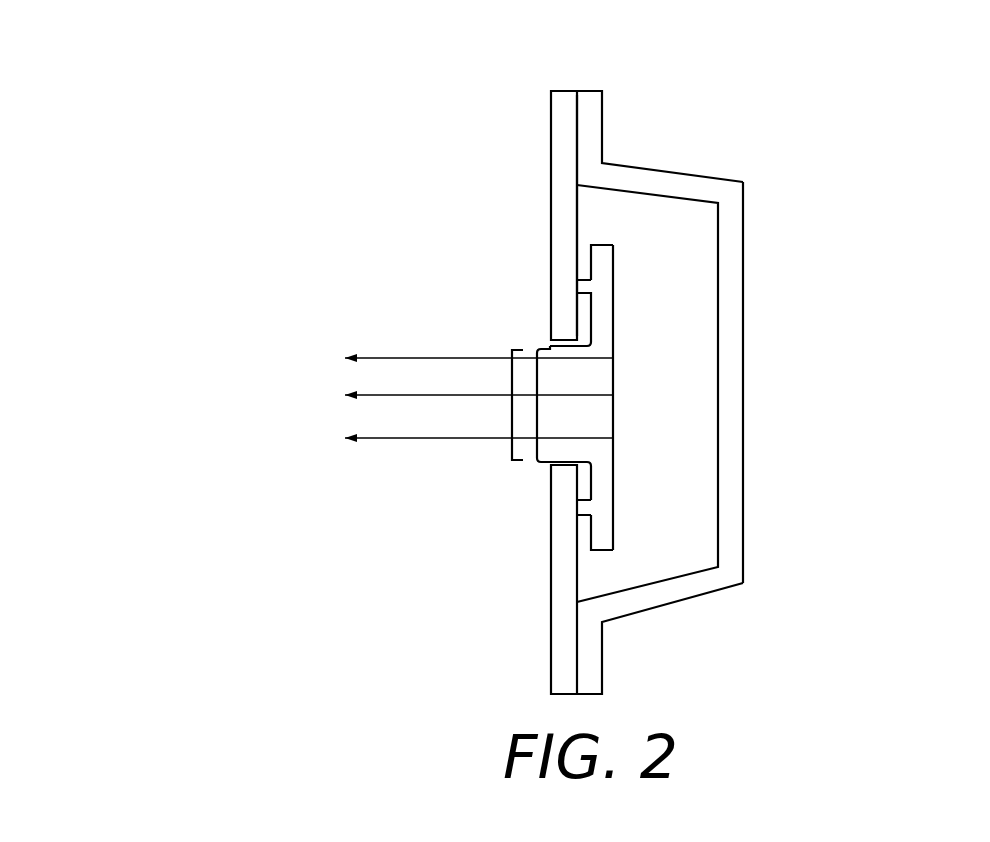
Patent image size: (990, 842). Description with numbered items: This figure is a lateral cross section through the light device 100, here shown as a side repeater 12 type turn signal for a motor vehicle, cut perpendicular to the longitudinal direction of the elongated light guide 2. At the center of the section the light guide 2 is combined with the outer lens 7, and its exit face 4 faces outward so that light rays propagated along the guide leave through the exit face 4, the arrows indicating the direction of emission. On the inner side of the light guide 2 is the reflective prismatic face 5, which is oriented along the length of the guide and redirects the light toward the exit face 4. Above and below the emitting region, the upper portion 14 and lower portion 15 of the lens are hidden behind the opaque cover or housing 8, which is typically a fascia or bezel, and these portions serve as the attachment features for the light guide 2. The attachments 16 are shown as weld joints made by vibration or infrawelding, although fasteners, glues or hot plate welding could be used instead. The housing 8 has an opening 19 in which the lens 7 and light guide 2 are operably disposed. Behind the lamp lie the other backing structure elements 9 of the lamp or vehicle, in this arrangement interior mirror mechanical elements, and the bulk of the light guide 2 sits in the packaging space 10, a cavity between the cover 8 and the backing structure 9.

The light device 100 is at (687, 108).
The light guide 2 is at (587, 421).
The exit face 4 is at (511, 414).
The prismatic face 5 is at (613, 368).
The outer lens 7 is at (533, 377).
The cover or housing 8 is at (550, 185).
The backing structure elements 9 is at (743, 507).
The packaging space 10 is at (660, 413).
The side repeater 12 is at (525, 255).
The upper portion of the lens 14 is at (600, 320).
The lower portion of the lens 15 is at (598, 470).
The attachments 16 is at (579, 287).
The opening 19 is at (569, 462).